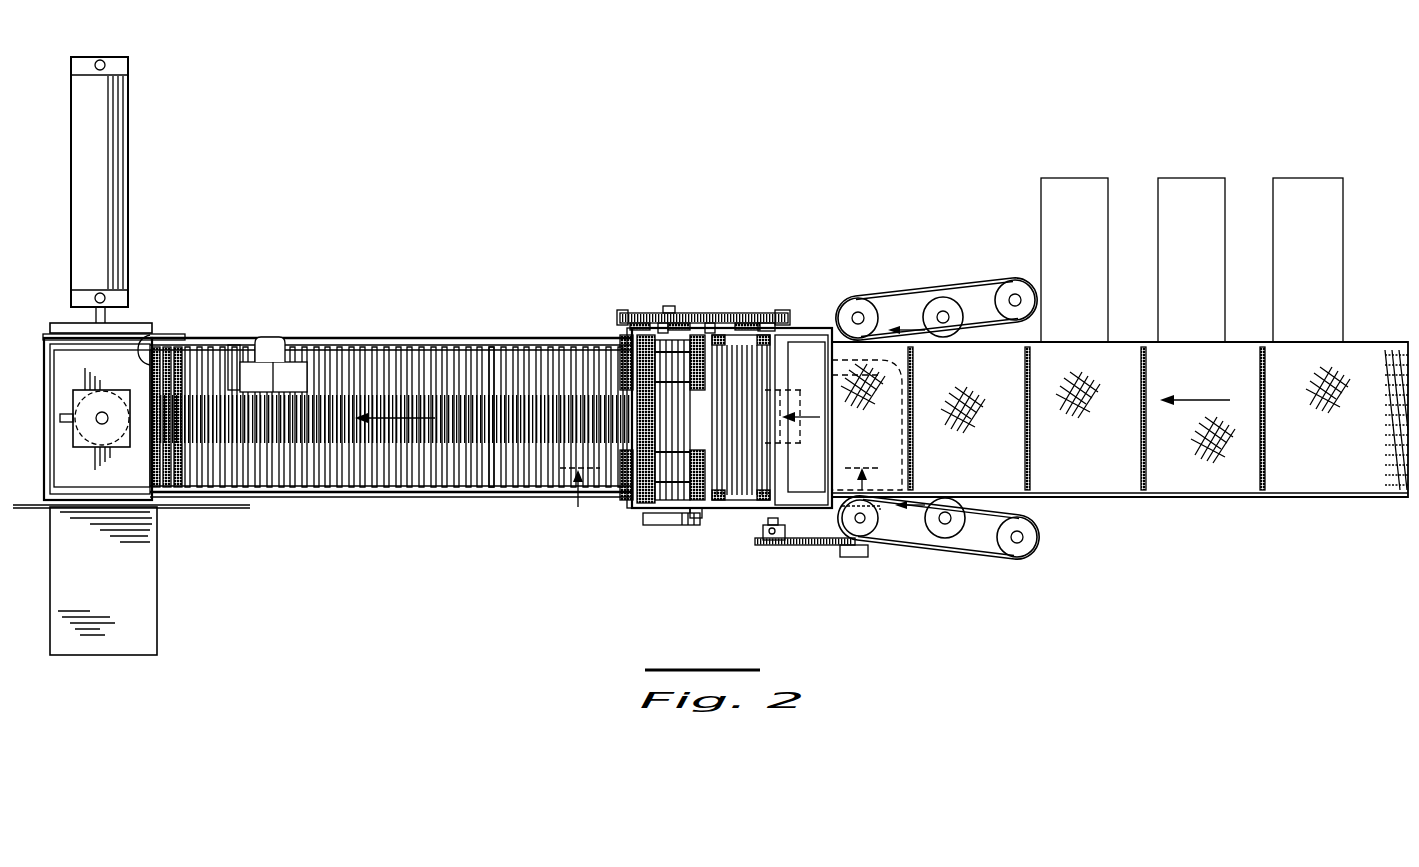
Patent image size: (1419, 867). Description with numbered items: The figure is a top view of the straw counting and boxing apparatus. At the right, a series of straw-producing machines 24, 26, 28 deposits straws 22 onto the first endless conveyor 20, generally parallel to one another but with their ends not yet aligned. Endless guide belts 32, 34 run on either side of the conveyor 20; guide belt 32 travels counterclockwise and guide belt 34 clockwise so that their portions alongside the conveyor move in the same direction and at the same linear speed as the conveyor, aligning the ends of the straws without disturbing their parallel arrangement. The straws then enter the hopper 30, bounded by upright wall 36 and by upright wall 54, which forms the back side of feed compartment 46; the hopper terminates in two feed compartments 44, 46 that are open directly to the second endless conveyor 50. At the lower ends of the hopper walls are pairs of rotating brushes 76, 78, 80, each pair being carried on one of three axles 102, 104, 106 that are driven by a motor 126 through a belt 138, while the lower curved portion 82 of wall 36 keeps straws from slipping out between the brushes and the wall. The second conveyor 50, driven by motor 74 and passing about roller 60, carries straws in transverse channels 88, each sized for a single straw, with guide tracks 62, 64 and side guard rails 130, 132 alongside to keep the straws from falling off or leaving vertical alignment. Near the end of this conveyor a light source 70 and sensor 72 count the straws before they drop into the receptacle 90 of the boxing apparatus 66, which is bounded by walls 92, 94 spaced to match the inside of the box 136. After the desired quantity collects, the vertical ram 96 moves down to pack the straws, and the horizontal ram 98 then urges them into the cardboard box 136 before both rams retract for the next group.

The first endless conveyor 20 is at (1322, 500).
The straws 22 is at (1262, 455).
The straw-producing machine 24 is at (1078, 178).
The straw-producing machine 26 is at (1185, 178).
The straw-producing machine 28 is at (1335, 195).
The hopper 30 is at (712, 385).
The guide belt 32 is at (898, 560).
The guide belt 34 is at (915, 292).
The upright wall 36 is at (627, 500).
The feed compartment 44 is at (686, 522).
The feed compartment 46 is at (745, 335).
The second endless conveyor 50 is at (385, 444).
The upright wall 54 is at (752, 500).
The roller 60 is at (835, 560).
The guide track 62 is at (352, 482).
The guide track 64 is at (390, 352).
The boxing apparatus 66 is at (62, 330).
The light source 70 is at (265, 372).
The sensor 72 is at (232, 348).
The motor 74 is at (885, 540).
The pair of rotating brushes 76 is at (622, 365).
The pair of rotating brushes 78 is at (668, 312).
The pair of rotating brushes 80 is at (770, 315).
The lower curved portion 82 is at (626, 350).
The transverse channels 88 is at (300, 415).
The receptacle 90 is at (83, 510).
The wall 92 is at (44, 388).
The wall 94 is at (140, 336).
The vertical ram 96 is at (110, 450).
The horizontal ram 98 is at (125, 278).
The axle 102 is at (622, 312).
The axle 104 is at (707, 310).
The axle 106 is at (800, 318).
The motor 126 is at (657, 520).
The side guard rail 130 is at (398, 497).
The side guard rail 132 is at (433, 340).
The cardboard box 136 is at (140, 640).
The belt 138 is at (650, 312).